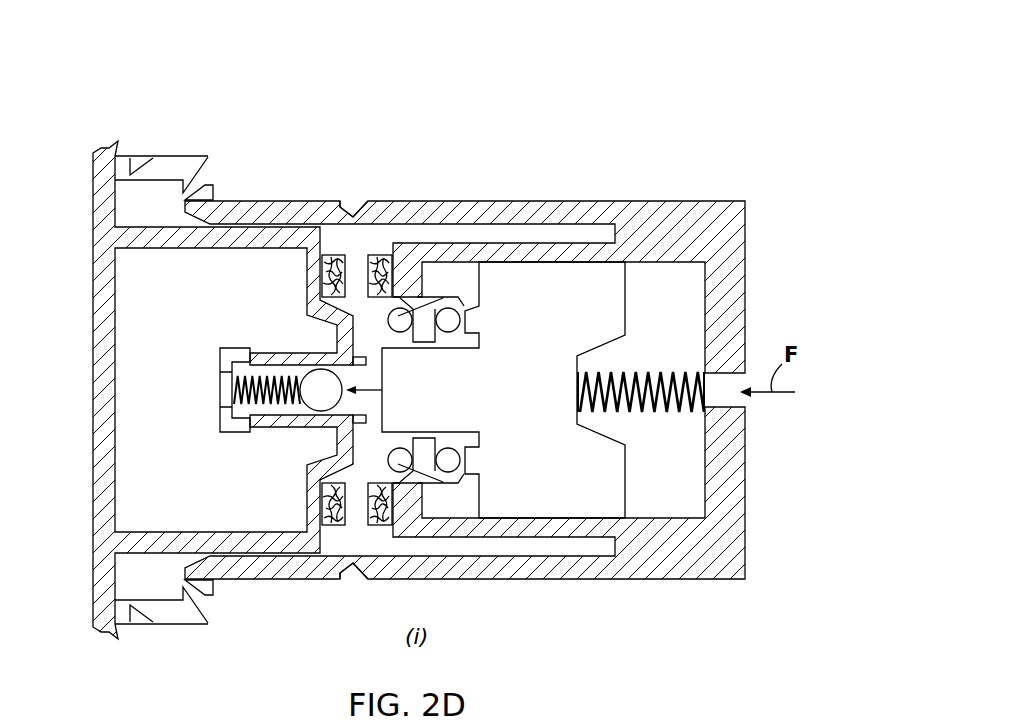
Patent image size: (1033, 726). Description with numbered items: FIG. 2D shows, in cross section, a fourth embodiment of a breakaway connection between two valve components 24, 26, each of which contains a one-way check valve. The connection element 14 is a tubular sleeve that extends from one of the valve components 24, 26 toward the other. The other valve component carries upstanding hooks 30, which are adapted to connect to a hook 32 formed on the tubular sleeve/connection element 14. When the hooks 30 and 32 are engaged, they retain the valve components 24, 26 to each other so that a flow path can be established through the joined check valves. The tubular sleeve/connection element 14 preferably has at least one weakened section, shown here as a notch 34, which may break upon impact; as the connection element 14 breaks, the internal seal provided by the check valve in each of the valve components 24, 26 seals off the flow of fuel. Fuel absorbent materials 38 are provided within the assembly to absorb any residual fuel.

The connection element 14 is at (588, 108).
The valve component 24 is at (152, 329).
The valve component 26 is at (760, 231).
The upstanding hooks 30 is at (185, 171).
The hook 32 is at (210, 185).
The notch 34 is at (356, 197).
The fuel absorbent materials 38 is at (379, 255).